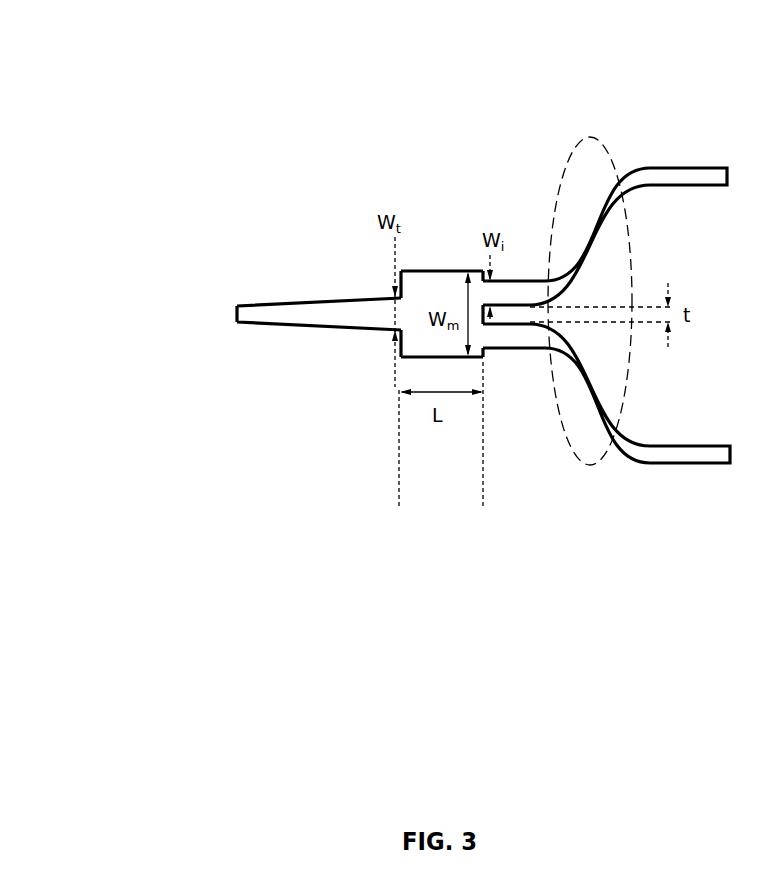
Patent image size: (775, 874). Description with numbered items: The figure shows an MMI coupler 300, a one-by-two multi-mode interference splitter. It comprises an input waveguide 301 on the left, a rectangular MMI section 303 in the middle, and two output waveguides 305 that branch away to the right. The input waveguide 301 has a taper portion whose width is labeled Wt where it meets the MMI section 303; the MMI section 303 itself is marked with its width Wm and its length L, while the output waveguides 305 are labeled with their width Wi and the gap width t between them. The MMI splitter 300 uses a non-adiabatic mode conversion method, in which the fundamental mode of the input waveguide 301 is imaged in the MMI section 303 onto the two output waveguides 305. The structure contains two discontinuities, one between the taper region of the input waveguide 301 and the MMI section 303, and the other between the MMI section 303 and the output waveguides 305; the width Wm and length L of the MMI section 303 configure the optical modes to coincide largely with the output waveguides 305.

The MMI coupler 300 is at (182, 116).
The input waveguide 301 is at (318, 335).
The MMI section 303 is at (450, 268).
The output waveguides 305 is at (603, 138).